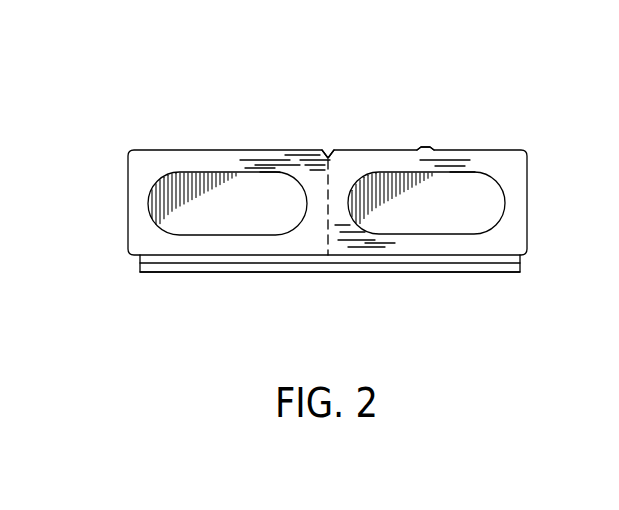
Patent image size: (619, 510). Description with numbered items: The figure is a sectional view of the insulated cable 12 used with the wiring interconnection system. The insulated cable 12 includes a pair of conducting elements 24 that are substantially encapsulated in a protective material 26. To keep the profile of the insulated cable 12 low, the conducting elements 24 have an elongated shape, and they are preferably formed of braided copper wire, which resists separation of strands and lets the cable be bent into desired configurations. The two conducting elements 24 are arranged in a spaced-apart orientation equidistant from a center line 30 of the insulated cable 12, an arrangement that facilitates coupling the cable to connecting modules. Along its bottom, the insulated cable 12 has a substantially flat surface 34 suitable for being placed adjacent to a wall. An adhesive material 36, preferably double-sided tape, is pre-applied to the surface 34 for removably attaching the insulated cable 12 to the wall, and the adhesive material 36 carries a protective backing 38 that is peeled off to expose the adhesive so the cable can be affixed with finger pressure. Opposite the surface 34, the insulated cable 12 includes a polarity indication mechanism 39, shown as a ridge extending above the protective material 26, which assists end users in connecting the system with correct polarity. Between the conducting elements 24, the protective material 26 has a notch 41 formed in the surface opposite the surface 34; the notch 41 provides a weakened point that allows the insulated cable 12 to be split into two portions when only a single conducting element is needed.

The insulated cable 12 is at (324, 188).
The conducting elements 24 is at (222, 180).
The protective material 26 is at (145, 170).
The center line 30 is at (327, 177).
The flat surface 34 is at (245, 255).
The adhesive material 36 is at (483, 260).
The protective backing 38 is at (375, 272).
The polarity indication mechanism 39 is at (430, 147).
The notch 41 is at (328, 157).